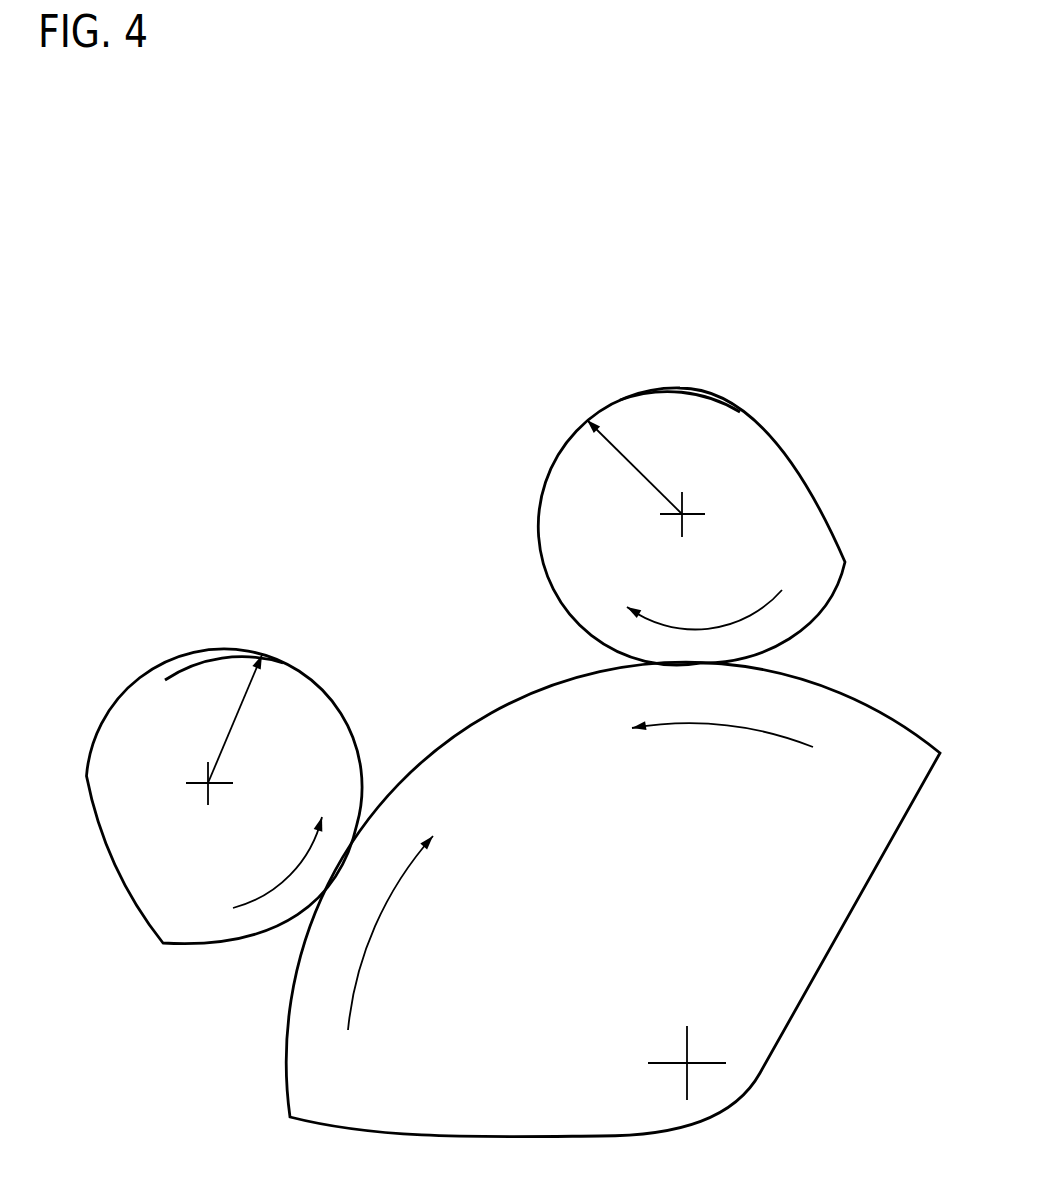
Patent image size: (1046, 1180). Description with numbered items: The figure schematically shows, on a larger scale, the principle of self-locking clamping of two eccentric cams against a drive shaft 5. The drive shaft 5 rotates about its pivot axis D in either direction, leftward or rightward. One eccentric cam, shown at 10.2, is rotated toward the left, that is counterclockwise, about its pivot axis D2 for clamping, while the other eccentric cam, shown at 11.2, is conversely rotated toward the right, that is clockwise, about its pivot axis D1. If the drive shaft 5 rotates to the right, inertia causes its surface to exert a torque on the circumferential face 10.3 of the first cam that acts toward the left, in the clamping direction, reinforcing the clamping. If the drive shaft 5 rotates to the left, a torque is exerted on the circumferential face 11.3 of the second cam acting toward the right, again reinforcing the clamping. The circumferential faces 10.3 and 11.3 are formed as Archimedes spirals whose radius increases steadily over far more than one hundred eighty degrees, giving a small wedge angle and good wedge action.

The drive shaft 5 is at (753, 980).
The pivot axis D is at (680, 1062).
The counter roller 10.2 is at (282, 707).
The circumferential face 10.3 is at (208, 647).
The pivot axis D2 is at (213, 787).
The counter roller 11.2 is at (738, 467).
The circumferential face 11.3 is at (701, 388).
The pivot axis D1 is at (683, 514).